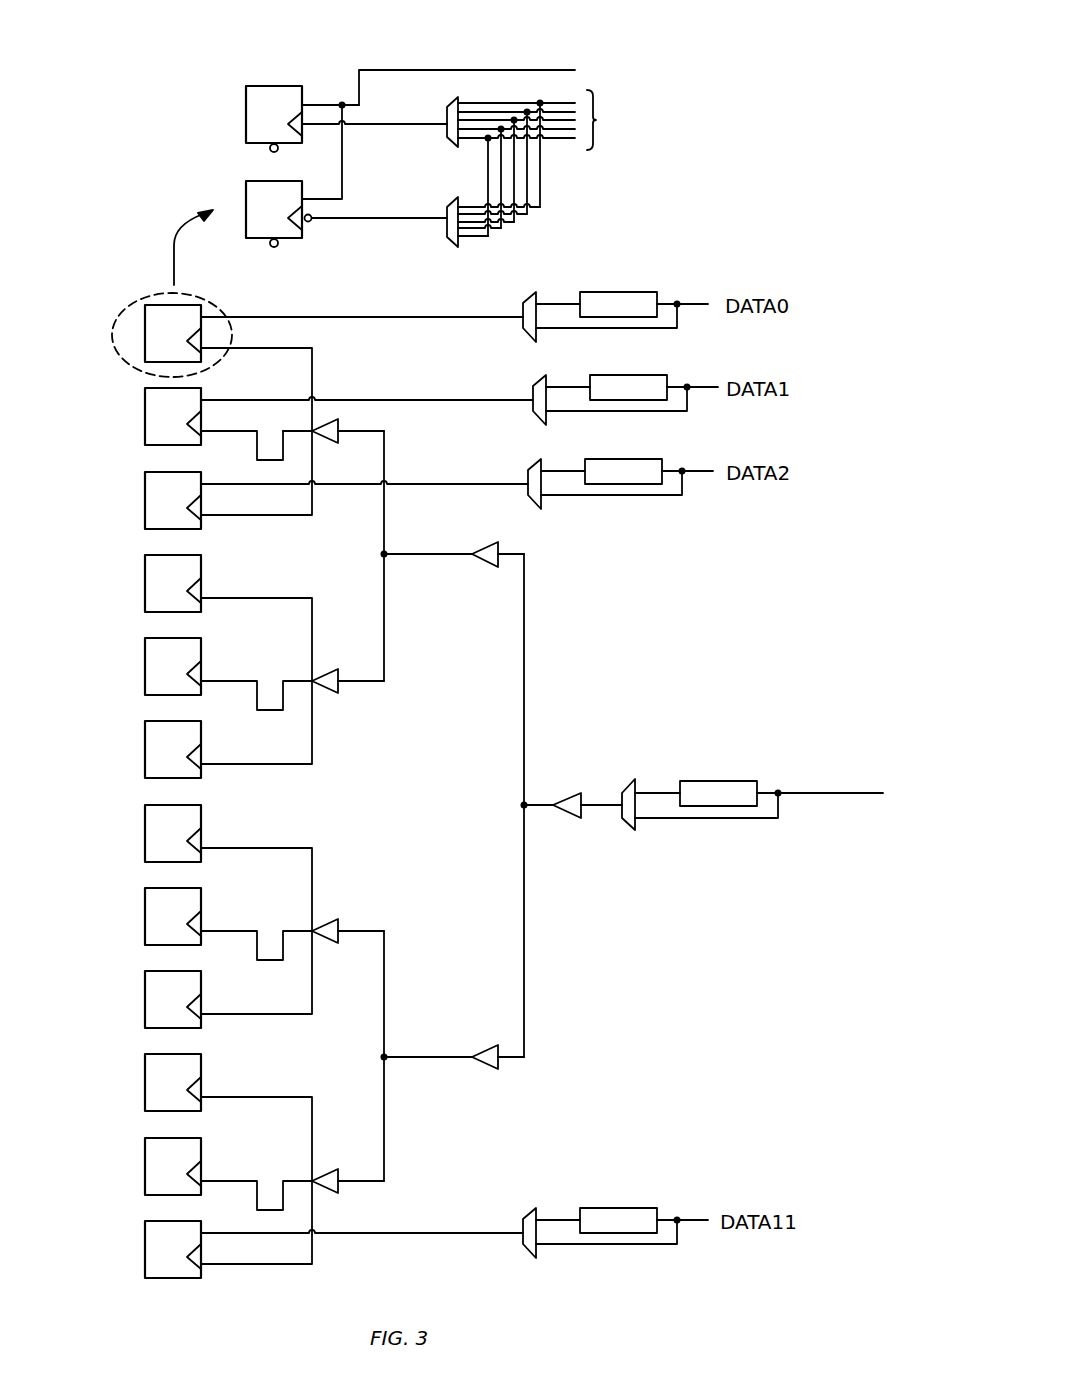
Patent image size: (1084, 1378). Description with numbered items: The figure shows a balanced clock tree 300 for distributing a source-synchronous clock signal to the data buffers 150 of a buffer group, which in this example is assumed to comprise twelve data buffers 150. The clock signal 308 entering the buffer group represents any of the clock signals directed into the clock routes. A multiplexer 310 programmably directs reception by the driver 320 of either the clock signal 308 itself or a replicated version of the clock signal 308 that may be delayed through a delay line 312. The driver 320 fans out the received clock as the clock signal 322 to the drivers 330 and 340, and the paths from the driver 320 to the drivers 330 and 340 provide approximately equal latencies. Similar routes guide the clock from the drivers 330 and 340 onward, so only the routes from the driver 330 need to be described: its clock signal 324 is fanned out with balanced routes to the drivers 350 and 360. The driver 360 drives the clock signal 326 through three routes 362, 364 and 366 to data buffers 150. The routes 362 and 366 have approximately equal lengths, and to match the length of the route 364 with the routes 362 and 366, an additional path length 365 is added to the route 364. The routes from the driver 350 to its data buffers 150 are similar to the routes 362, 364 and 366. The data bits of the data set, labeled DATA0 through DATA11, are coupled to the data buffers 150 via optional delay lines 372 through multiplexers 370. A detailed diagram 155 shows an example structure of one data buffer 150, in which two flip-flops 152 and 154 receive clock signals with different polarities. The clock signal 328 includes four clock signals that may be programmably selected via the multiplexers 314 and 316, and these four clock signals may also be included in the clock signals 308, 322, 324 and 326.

The data buffer 150 is at (144, 416).
The flip-flop 152 is at (251, 85).
The flip-flop 154 is at (258, 238).
The detailed diagram 155 is at (561, 53).
The balanced clock tree 300 is at (775, 235).
The clock signal 308 is at (831, 768).
The multiplexer 310 is at (625, 827).
The delay line 312 is at (715, 781).
The multiplexer 314 is at (448, 141).
The multiplexer 316 is at (448, 241).
The driver 320 is at (566, 818).
The clock signal 322 is at (540, 803).
The clock signal 324 is at (395, 553).
The clock signal 326 is at (353, 427).
The clock signal 328 is at (547, 163).
The driver 330 is at (482, 570).
The driver 340 is at (487, 1045).
The driver 350 is at (323, 673).
The driver 360 is at (325, 438).
The route 362 is at (312, 370).
The route 364 is at (293, 428).
The additional path length 365 is at (253, 437).
The route 366 is at (312, 493).
The multiplexer 370 is at (528, 333).
The delay line 372 is at (615, 292).